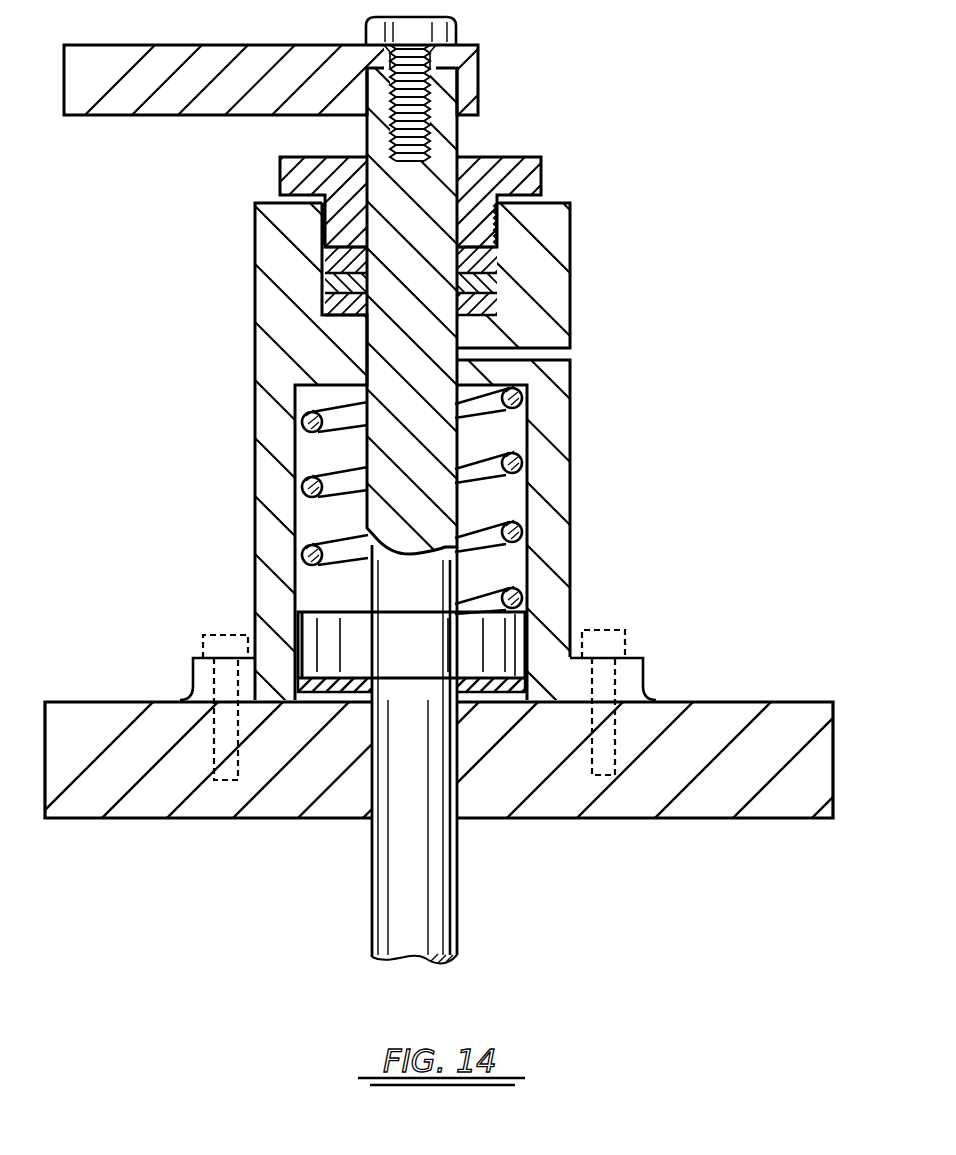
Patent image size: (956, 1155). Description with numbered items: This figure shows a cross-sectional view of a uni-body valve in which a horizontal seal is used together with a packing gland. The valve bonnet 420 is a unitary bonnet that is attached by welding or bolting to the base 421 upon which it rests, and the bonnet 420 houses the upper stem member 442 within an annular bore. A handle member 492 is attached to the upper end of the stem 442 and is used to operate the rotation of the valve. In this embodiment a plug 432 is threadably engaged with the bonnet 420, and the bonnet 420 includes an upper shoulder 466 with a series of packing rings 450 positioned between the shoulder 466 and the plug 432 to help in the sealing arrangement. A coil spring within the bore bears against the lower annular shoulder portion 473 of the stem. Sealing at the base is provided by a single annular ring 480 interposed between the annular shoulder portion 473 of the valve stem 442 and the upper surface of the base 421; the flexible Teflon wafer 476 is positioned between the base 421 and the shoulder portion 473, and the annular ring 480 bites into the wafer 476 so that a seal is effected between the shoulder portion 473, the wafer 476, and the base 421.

The handle member 492 is at (245, 62).
The plug 432 is at (307, 178).
The packing rings 450 is at (500, 257).
The valve bonnet 420 is at (290, 255).
The upper shoulder 466 is at (333, 352).
The upper stem member 442 is at (420, 585).
The annular shoulder portion 473 is at (328, 635).
The base 421 is at (87, 732).
The annular ring 480 is at (337, 698).
The flexible wafer 476 is at (512, 703).